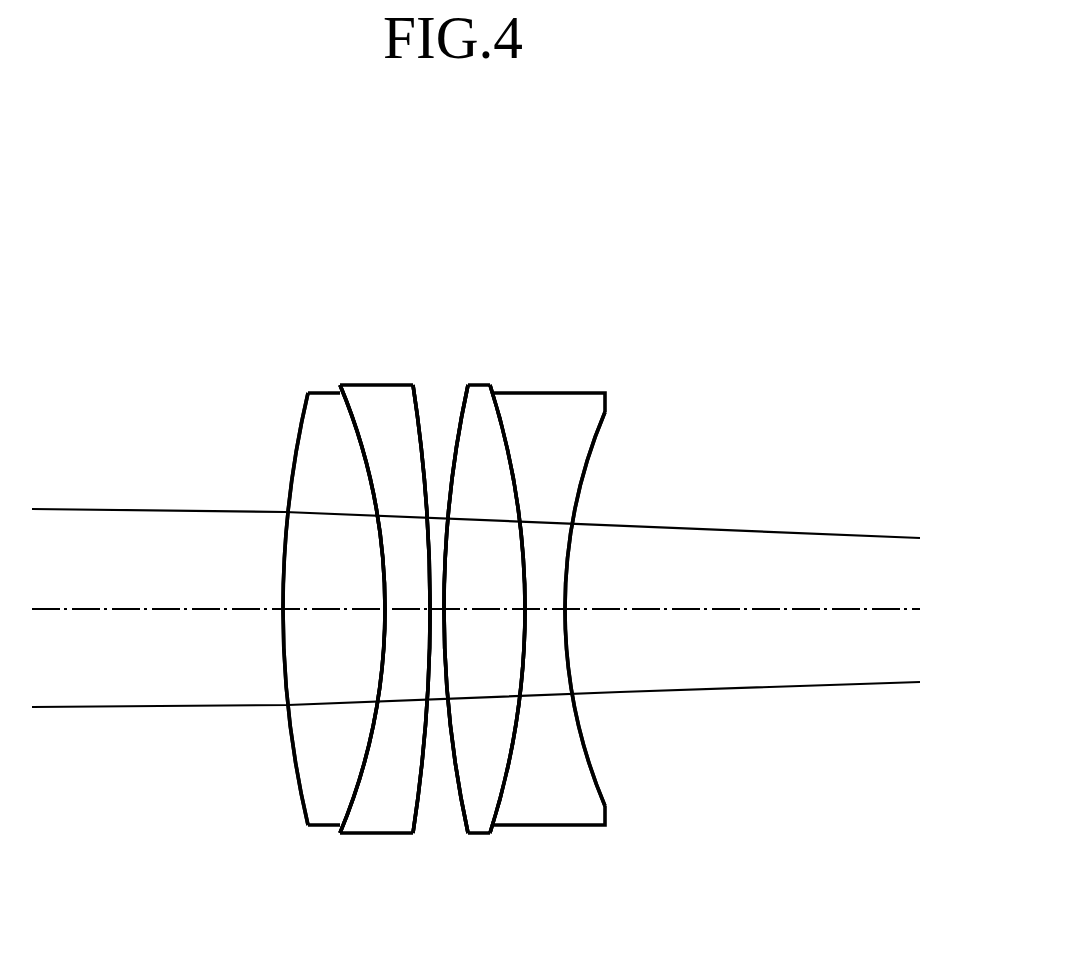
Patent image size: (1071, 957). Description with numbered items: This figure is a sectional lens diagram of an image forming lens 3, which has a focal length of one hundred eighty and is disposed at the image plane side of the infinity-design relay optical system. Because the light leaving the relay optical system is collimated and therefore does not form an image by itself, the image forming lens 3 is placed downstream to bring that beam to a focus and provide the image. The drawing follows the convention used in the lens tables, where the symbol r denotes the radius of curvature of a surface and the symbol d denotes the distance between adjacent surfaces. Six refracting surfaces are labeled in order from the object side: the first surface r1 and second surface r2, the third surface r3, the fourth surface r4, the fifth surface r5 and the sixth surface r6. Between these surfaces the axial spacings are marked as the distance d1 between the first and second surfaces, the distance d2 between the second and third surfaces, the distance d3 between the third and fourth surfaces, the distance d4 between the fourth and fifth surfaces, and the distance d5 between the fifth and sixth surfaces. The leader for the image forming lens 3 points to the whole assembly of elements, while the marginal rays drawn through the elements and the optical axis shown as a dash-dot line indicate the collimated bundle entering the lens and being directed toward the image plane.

The image forming lens 3 is at (603, 233).
The radius of curvature of first surface r1 is at (302, 417).
The radius of curvature of second surface r2 is at (350, 415).
The radius of curvature of third surface r3 is at (417, 405).
The radius of curvature of fourth surface r4 is at (463, 418).
The radius of curvature of fifth surface r5 is at (503, 427).
The radius of curvature of sixth surface r6 is at (602, 428).
The distance between first and second surfaces d1 is at (345, 612).
The distance between second and third surfaces d2 is at (405, 612).
The distance between third and fourth surfaces d3 is at (438, 612).
The distance between fourth and fifth surfaces d4 is at (482, 612).
The distance between fifth and sixth surfaces d5 is at (542, 612).